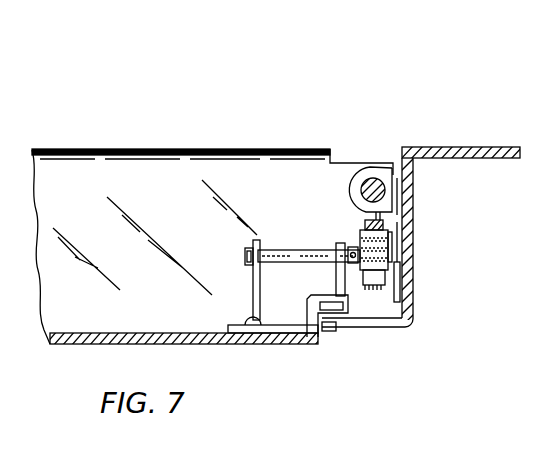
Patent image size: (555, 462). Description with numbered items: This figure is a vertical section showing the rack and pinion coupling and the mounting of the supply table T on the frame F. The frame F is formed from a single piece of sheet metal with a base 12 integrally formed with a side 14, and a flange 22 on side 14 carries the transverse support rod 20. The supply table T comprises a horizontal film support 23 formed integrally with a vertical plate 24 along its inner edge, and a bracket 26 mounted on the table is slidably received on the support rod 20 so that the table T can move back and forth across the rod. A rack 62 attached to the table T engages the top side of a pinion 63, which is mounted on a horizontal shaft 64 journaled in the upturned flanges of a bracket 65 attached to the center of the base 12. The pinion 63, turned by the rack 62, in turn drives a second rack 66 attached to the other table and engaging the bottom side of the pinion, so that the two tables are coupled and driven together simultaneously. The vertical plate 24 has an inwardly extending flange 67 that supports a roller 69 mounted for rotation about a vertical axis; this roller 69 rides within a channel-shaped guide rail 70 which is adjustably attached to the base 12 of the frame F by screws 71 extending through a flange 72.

The frame F is at (113, 148).
The supply table T is at (443, 146).
The base 12 is at (108, 335).
The side 14 is at (166, 168).
The transverse support rod 20 is at (358, 182).
The flange 22 is at (357, 162).
The horizontal film support 23 is at (500, 159).
The vertical plate 24 is at (408, 232).
The bracket 26 is at (388, 200).
The rack 62 is at (363, 226).
The pinion 63 is at (390, 255).
The horizontal shaft 64 is at (287, 250).
The bracket 65 is at (256, 275).
The rack 66 is at (388, 289).
The inwardly extending flange 67 is at (377, 329).
The roller 69 is at (343, 307).
The channel-shaped guide rail 70 is at (307, 297).
The screws 71 is at (250, 320).
The flange 72 is at (283, 328).